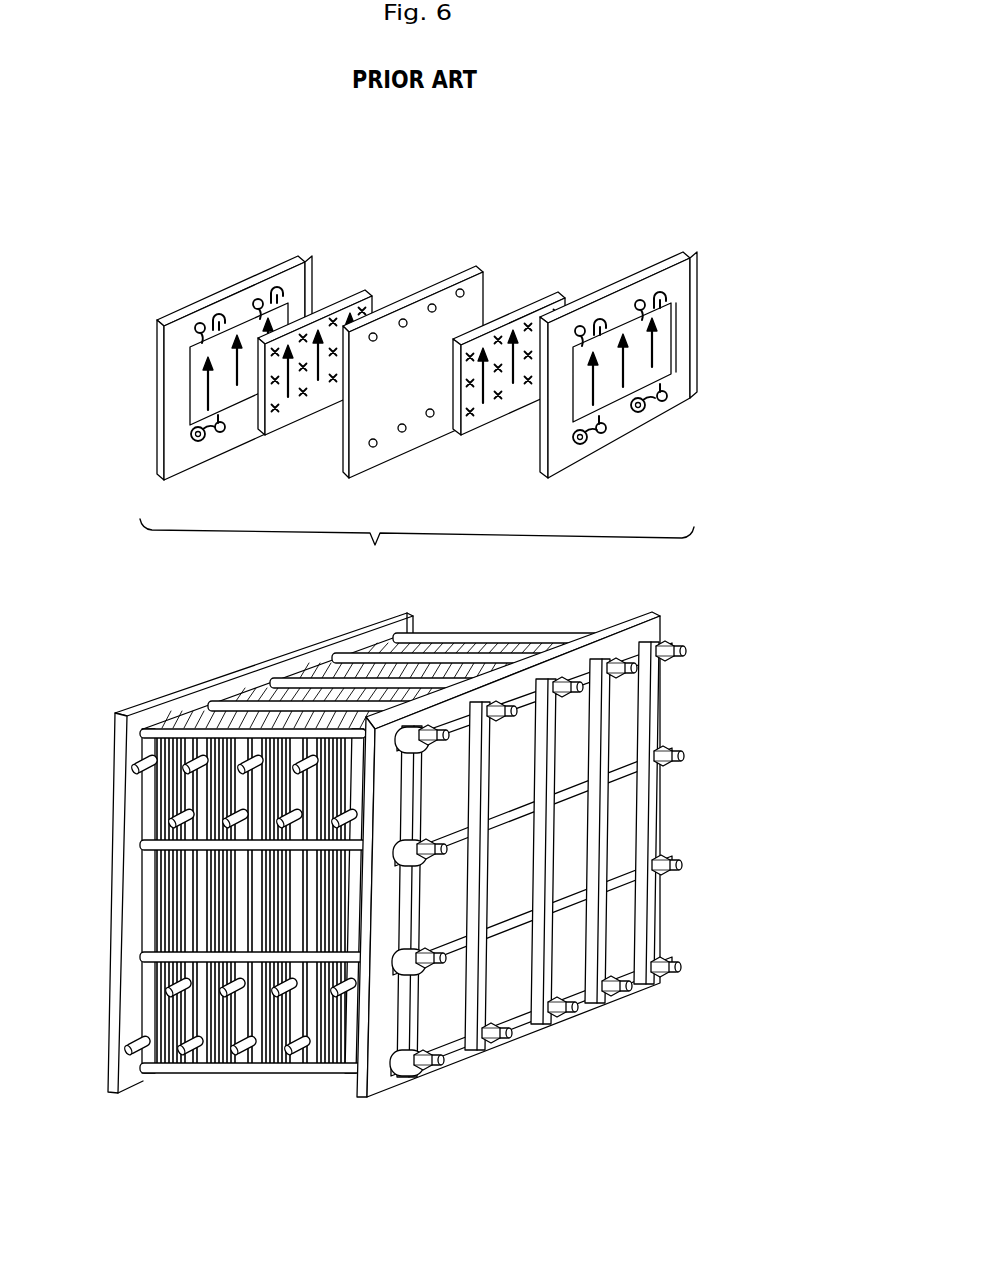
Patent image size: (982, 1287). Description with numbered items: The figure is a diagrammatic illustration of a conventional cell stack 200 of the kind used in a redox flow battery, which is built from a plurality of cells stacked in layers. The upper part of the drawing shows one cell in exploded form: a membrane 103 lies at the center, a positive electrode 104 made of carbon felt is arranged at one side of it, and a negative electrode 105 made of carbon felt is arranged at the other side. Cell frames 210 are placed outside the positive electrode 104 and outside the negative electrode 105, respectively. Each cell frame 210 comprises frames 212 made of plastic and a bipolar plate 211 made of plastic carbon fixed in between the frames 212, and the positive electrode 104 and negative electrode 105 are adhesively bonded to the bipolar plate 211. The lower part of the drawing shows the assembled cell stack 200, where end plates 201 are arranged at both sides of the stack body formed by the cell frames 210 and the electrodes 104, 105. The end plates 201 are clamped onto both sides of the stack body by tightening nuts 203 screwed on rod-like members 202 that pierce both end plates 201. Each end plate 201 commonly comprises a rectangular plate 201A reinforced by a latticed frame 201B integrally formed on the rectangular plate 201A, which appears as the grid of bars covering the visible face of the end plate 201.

The cell frame 210 is at (192, 300).
The positive electrode 104 is at (345, 300).
The membrane 103 is at (437, 287).
The negative electrode 105 is at (526, 301).
The frame 212 is at (652, 358).
The bipolar plate 211 is at (662, 345).
The cell stack 200 is at (474, 900).
The end plate 201 is at (615, 846).
The rectangular plate 201A is at (663, 625).
The latticed frame 201B is at (658, 712).
The rod-like member 202 is at (562, 1018).
The nut 203 is at (480, 1049).